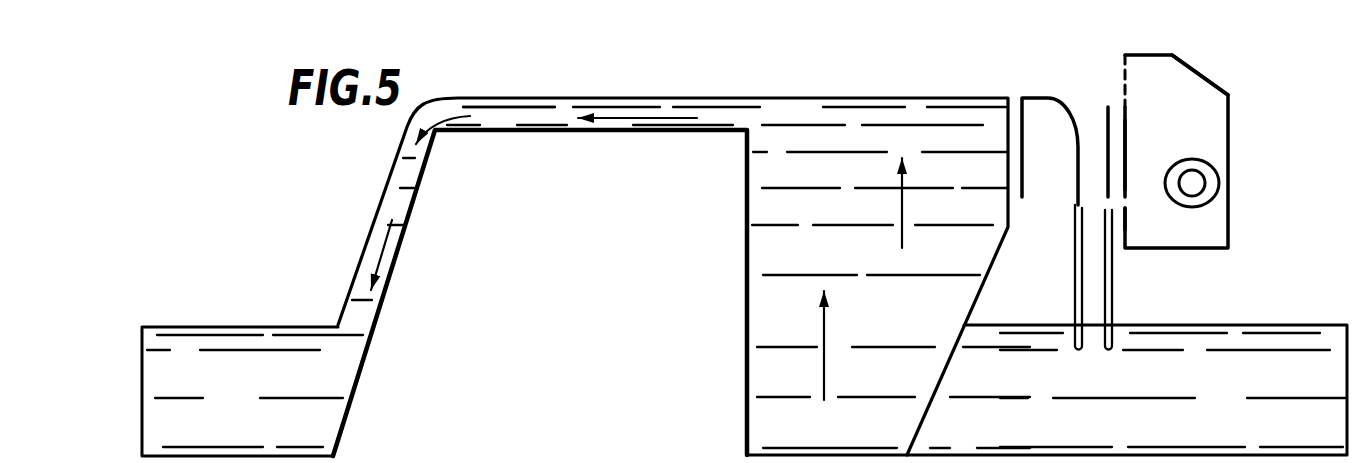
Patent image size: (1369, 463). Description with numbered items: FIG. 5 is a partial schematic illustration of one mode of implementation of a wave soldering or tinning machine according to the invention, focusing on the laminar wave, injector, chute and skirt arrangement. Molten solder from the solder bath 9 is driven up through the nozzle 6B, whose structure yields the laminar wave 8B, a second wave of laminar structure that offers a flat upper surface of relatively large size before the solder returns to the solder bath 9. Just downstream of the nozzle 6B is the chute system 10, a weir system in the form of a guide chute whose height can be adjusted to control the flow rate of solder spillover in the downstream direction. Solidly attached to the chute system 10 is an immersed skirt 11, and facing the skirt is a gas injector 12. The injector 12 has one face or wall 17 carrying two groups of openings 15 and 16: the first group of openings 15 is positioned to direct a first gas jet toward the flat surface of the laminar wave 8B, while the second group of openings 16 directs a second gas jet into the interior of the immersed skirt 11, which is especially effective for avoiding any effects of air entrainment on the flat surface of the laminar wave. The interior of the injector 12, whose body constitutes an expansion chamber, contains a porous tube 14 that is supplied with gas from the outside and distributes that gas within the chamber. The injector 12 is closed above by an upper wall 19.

The solder bath 9 is at (240, 420).
The nozzle 6B is at (392, 314).
The laminar wave 8B is at (697, 90).
The chute system 10 is at (1101, 127).
The immersed skirt 11 is at (1091, 287).
The gas injector 12 is at (1242, 109).
The porous tube 14 is at (1212, 151).
The first group of openings 15 is at (1134, 84).
The second group of openings 16 is at (1134, 199).
The wall of the injector 17 is at (1132, 157).
The upper wall of the injector 19 is at (1199, 56).